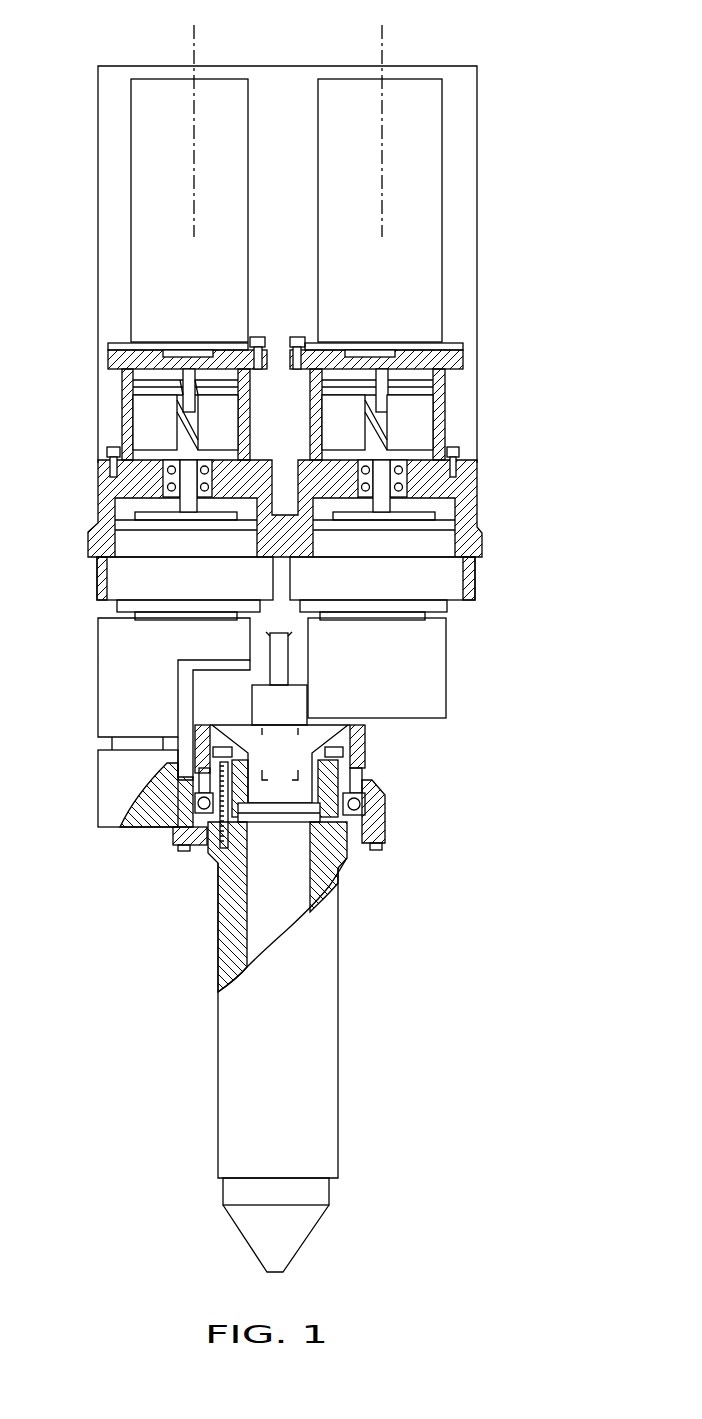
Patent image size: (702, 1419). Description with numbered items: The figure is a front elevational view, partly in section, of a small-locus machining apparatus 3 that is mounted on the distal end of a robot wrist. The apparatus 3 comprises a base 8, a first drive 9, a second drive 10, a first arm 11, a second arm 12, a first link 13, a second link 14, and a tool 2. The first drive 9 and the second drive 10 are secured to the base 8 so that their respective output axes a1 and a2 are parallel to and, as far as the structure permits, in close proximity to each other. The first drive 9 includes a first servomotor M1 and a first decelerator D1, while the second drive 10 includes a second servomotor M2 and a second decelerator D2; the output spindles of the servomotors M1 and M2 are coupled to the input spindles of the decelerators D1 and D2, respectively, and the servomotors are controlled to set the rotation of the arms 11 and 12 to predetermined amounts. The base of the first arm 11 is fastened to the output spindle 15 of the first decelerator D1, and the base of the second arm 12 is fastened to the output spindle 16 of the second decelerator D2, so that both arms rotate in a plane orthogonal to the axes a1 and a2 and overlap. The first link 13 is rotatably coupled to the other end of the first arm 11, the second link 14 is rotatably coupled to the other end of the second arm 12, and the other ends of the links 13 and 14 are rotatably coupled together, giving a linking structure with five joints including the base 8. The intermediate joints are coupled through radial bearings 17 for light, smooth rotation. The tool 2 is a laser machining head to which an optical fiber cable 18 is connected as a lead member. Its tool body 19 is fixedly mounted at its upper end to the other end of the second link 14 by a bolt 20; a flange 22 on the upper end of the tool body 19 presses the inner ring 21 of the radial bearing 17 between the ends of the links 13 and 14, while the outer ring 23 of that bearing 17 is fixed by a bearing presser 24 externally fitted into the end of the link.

The small-locus machining apparatus 3 is at (560, 117).
The output axis a1 is at (197, 118).
The output axis a2 is at (385, 118).
The first servomotor M1 is at (148, 235).
The second servomotor M2 is at (425, 238).
The first drive 9 is at (108, 397).
The second drive 10 is at (460, 414).
The base 8 is at (100, 472).
The first decelerator D1 is at (110, 553).
The second decelerator D2 is at (448, 578).
The output spindle 15 is at (118, 578).
The output spindle 16 is at (443, 608).
The first arm 11 is at (110, 684).
The second arm 12 is at (430, 684).
The first link 13 is at (117, 777).
The optical fiber cable 18 is at (282, 653).
The bolt 20 is at (227, 745).
The second link 14 is at (362, 748).
The inner ring 21 is at (357, 780).
The radial bearing 17 is at (172, 823).
The outer ring 23 is at (195, 797).
The bearing presser 24 is at (205, 848).
The flange 22 is at (350, 855).
The tool body 19 is at (235, 952).
The tool 2 is at (346, 1004).